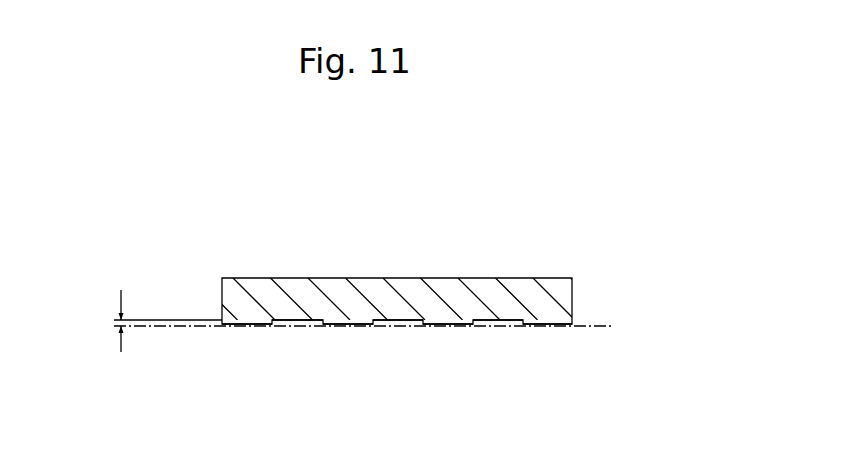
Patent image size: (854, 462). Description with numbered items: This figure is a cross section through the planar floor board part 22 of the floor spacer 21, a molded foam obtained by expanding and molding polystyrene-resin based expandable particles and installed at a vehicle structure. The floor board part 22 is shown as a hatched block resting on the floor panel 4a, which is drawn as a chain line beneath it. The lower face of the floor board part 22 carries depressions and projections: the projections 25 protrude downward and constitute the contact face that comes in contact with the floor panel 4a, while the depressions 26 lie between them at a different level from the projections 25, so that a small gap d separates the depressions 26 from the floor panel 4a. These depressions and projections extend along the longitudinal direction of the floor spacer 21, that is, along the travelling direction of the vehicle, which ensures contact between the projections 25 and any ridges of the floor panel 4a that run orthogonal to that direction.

The floor spacer 21 is at (292, 207).
The floor board part 22 is at (479, 292).
The projections 25 is at (247, 327).
The depressions 26 is at (290, 329).
The floor panel 4a is at (597, 323).
The gap dimension d is at (121, 322).